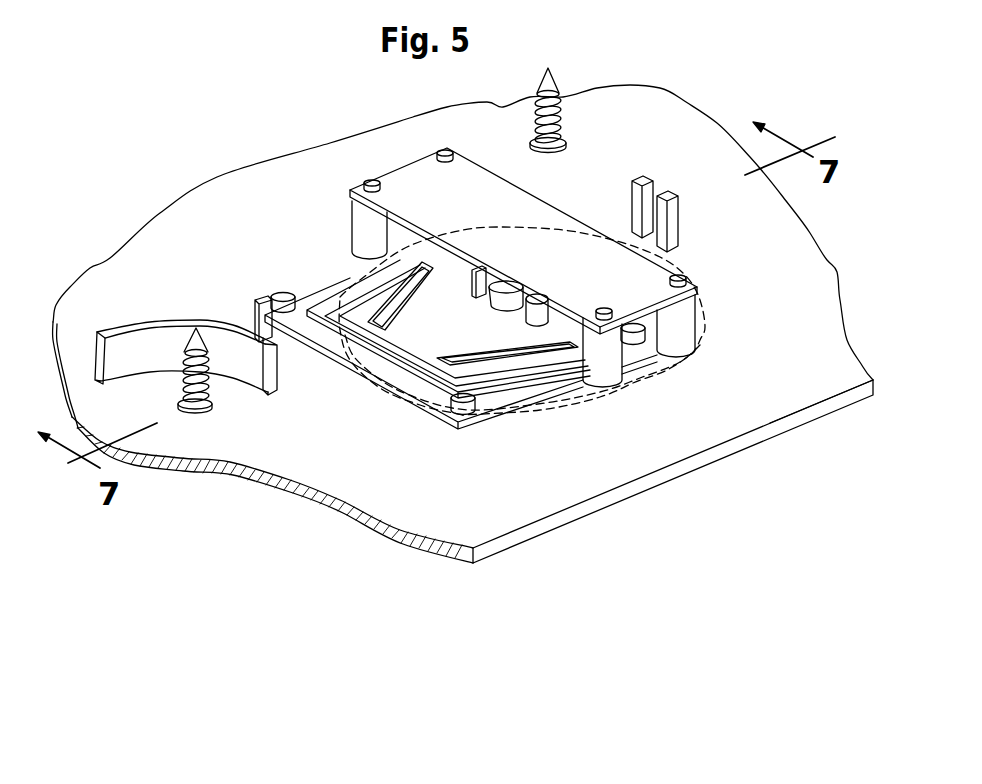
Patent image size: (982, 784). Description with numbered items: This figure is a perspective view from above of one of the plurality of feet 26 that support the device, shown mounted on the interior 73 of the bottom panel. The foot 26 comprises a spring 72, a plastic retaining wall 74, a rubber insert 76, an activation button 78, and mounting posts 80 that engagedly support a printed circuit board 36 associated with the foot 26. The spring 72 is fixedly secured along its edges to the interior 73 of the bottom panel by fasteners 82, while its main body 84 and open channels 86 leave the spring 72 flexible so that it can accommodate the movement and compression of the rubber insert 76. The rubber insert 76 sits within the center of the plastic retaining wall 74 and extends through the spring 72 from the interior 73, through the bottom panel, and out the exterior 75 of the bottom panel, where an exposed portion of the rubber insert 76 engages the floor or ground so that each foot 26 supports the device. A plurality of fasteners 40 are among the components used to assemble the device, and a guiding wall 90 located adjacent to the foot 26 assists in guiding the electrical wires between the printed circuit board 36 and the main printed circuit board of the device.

The foot 26 is at (705, 327).
The printed circuit board 36 is at (493, 195).
The fastener 40 is at (557, 78).
The spring 72 is at (477, 417).
The interior of the bottom panel 73 is at (800, 257).
The plastic retaining wall 74 is at (545, 313).
The exterior of the bottom panel 75 is at (770, 453).
The rubber insert 76 is at (515, 292).
The activation button 78 is at (510, 290).
The mounting post 80 is at (440, 150).
The fastener 82 is at (280, 290).
The main body 84 is at (383, 371).
The open channel 86 is at (363, 293).
The guiding wall 90 is at (258, 380).